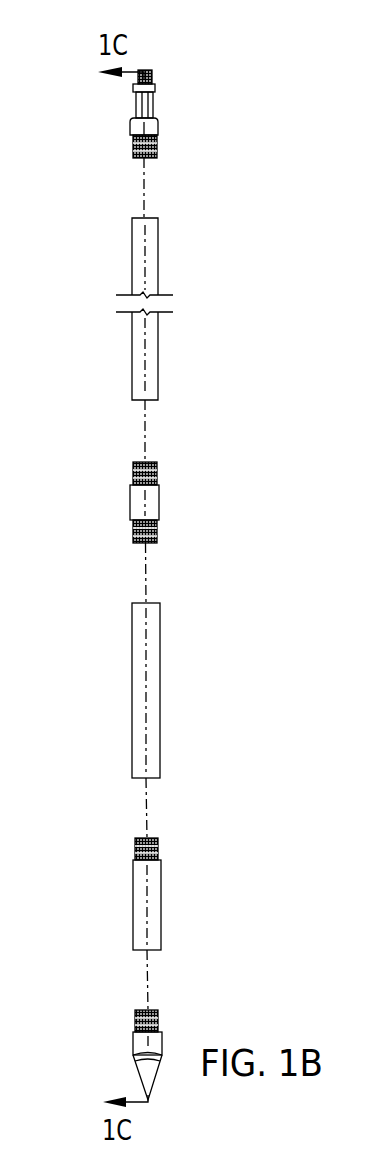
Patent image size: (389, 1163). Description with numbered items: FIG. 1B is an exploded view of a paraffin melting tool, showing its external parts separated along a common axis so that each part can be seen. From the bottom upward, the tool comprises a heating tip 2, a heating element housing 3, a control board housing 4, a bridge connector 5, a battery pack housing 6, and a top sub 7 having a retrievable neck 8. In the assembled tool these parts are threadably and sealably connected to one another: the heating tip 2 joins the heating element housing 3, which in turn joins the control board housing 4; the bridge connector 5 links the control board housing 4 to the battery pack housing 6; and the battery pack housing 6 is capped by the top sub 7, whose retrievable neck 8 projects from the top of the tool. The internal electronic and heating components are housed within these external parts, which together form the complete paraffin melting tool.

The heating tip 2 is at (133, 1060).
The heating element housing 3 is at (133, 897).
The control board housing 4 is at (132, 688).
The bridge connector 5 is at (130, 500).
The battery pack housing 6 is at (133, 342).
The top sub 7 is at (130, 132).
The retrievable neck 8 is at (155, 100).